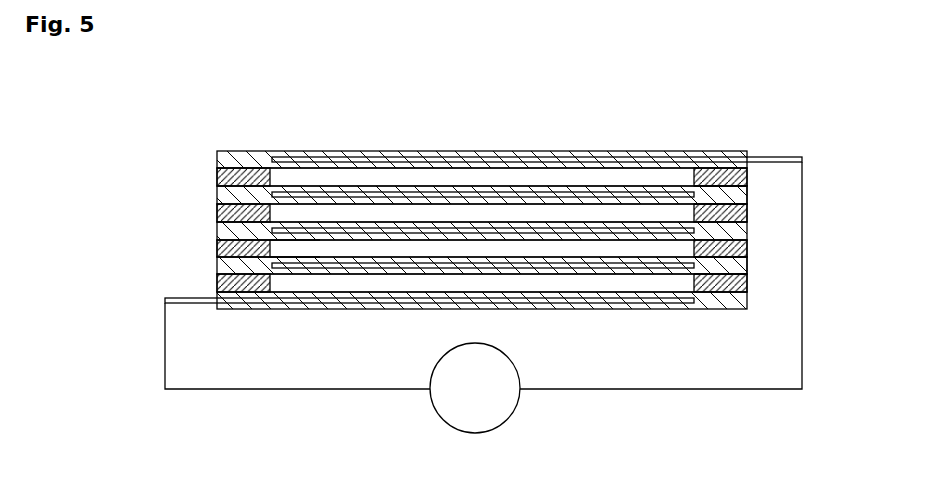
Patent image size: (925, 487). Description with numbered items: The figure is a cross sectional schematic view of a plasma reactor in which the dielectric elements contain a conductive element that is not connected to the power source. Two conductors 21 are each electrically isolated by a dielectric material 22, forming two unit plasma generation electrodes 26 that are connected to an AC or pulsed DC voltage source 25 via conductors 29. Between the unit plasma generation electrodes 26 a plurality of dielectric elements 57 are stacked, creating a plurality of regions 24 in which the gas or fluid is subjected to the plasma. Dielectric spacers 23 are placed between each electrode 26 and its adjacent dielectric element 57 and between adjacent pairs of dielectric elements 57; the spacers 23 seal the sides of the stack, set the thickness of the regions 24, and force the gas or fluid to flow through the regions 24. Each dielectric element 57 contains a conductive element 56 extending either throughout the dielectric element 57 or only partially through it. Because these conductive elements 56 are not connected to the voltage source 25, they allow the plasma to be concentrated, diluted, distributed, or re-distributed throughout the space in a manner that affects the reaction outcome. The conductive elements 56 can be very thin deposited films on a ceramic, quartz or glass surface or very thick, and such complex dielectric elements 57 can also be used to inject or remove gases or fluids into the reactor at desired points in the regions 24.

The conductor 21 is at (178, 300).
The dielectric material 22 is at (253, 160).
The dielectric spacer 23 is at (218, 213).
The plasma-discharge region 24 is at (295, 248).
The AC or pulsed DC voltage source 25 is at (503, 403).
The unit plasma generation electrode 26 is at (522, 151).
The conductor 29 is at (255, 389).
The conductive element 56 is at (697, 253).
The dielectric element 57 is at (725, 196).